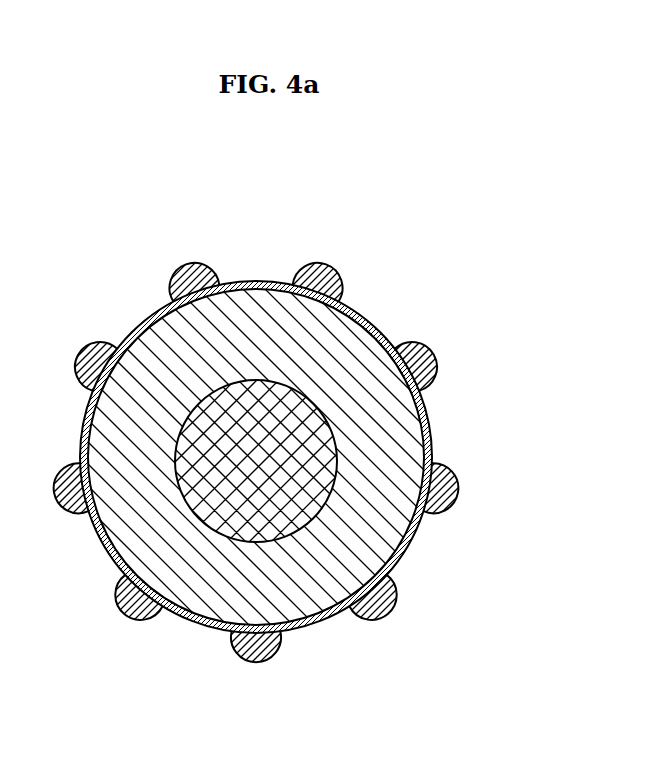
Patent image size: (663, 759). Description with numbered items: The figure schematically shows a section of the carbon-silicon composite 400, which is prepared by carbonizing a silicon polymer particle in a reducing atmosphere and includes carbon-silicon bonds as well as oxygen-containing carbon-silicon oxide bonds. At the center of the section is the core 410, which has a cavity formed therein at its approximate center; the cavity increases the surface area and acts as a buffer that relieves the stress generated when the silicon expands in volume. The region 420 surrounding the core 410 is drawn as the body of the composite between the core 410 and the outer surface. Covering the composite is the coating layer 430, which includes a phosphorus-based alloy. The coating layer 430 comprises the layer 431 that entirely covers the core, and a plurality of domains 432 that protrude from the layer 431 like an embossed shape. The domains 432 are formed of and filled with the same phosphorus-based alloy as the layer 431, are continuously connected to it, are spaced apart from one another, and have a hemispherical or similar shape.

The carbon-silicon composite 400 is at (407, 205).
The core 410 is at (293, 417).
The cladding 420 is at (400, 426).
The coating layer 430 is at (255, 216).
The layer 431 is at (258, 282).
The domains 432 is at (201, 267).